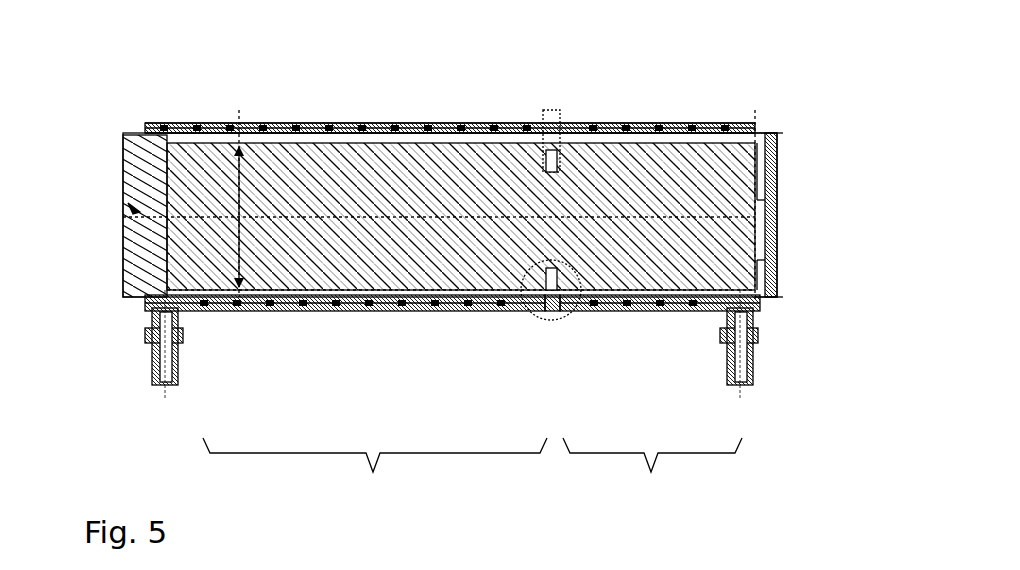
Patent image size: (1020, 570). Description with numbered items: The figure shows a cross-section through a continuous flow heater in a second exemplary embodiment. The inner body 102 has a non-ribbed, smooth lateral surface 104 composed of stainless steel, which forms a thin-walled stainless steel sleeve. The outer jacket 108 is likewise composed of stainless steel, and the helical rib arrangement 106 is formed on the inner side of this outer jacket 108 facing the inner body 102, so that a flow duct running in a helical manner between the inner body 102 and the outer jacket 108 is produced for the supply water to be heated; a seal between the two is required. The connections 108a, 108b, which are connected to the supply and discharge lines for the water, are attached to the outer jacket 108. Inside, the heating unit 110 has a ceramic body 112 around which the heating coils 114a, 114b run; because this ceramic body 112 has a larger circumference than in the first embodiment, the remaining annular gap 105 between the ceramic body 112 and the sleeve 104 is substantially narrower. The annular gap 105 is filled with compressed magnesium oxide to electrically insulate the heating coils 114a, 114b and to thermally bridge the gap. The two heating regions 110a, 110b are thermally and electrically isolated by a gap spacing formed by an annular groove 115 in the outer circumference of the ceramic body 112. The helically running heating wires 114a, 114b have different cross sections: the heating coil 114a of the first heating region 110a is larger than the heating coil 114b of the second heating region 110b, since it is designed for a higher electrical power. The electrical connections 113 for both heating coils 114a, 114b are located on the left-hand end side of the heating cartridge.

The inner body 102 is at (145, 128).
The lateral surface 104 is at (338, 126).
The annular gap 105 is at (310, 126).
The helical rib arrangement 106 is at (458, 126).
The outer jacket 108 is at (632, 126).
The heating unit 110 is at (755, 168).
The first heating region 110a is at (375, 468).
The second heating region 110b is at (652, 468).
The ceramic body 112 is at (452, 250).
The electrical connections 113 is at (123, 242).
The heating coil 114a is at (307, 292).
The heating coil 114b is at (612, 292).
The annular groove 115 is at (554, 282).
The connection 108a is at (163, 373).
The connection 108b is at (748, 365).